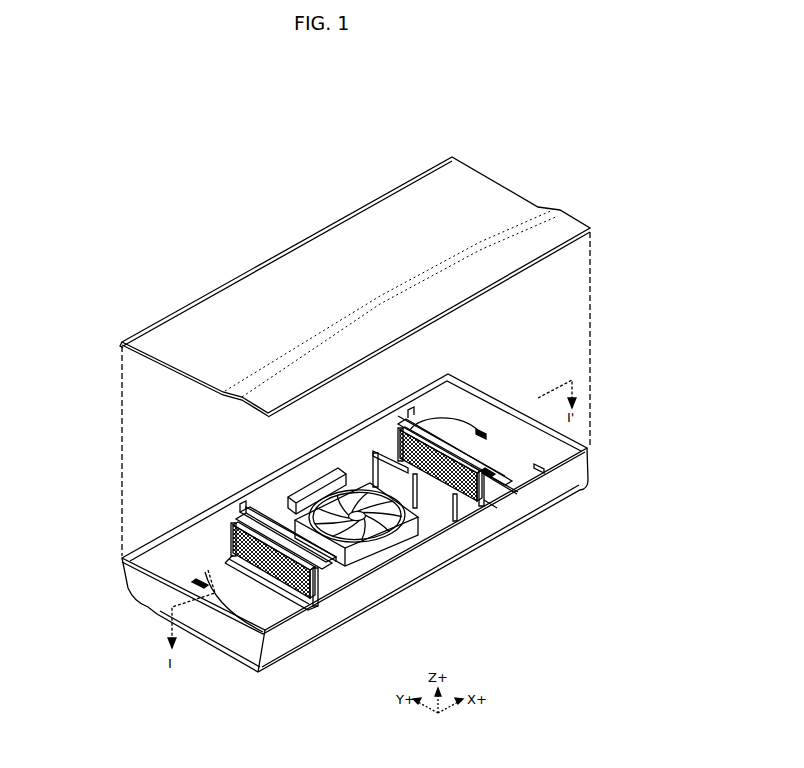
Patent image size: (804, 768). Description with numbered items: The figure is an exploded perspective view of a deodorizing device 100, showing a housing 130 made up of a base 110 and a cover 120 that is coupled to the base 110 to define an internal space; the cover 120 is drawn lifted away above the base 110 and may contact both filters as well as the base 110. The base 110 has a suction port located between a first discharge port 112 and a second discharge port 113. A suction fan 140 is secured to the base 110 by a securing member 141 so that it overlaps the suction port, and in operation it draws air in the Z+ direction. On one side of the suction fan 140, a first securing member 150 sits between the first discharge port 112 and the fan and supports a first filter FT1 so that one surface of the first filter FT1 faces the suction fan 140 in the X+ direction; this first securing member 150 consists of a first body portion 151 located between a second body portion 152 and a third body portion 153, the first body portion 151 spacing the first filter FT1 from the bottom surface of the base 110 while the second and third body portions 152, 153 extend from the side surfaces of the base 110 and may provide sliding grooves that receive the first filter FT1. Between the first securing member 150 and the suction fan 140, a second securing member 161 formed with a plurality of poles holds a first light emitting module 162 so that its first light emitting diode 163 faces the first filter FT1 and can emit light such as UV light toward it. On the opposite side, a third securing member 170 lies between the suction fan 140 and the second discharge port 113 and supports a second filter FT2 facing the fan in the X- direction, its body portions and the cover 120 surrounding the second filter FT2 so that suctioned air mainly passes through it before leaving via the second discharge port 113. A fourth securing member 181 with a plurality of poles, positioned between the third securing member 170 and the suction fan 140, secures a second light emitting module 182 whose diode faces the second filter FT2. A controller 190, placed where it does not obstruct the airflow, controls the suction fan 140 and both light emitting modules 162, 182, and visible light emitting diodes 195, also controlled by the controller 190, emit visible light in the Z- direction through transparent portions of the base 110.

The deodorizing device 100 is at (492, 161).
The base 110 is at (120, 523).
The first discharge port 112 is at (201, 592).
The second discharge port 113 is at (499, 463).
The cover 120 is at (168, 367).
The housing 130 is at (62, 440).
The suction fan 140 is at (398, 548).
The securing member 141 is at (396, 562).
The first securing member 150 is at (277, 634).
The first body portion 151 is at (290, 601).
The second body portion 152 is at (277, 556).
The third body portion 153 is at (328, 608).
The second securing member 161 is at (258, 518).
The first light emitting module 162 is at (268, 512).
The first light emitting diode 163 is at (293, 515).
The third securing member 170 is at (498, 494).
The fourth securing member 181 is at (372, 455).
The second light emitting module 182 is at (384, 447).
The controller 190 is at (318, 475).
The visible light emitting diodes 195 is at (482, 427).
The first filter FT1 is at (228, 522).
The second filter FT2 is at (420, 426).